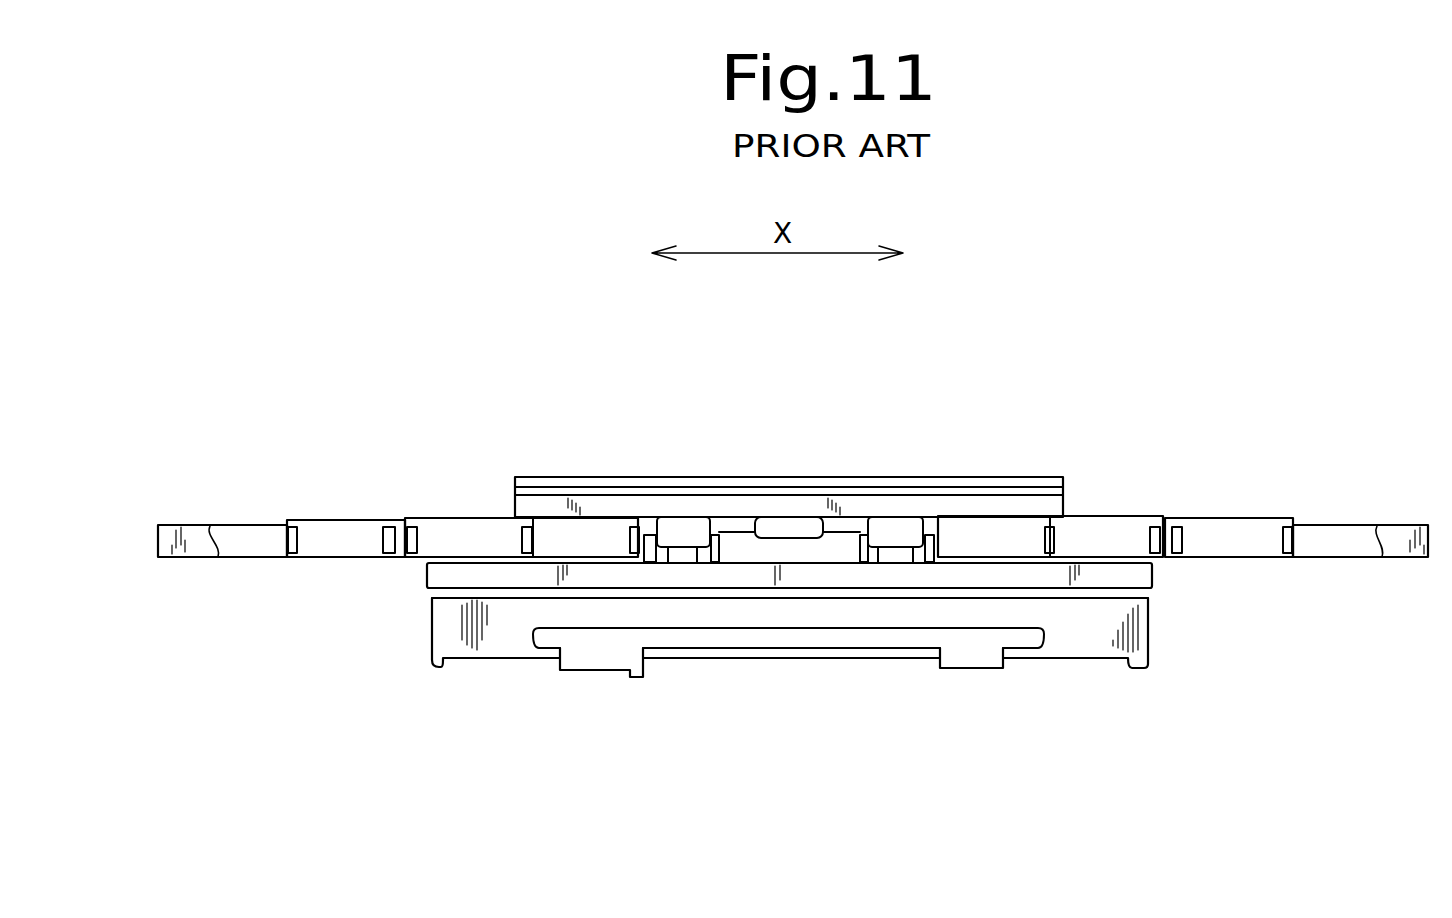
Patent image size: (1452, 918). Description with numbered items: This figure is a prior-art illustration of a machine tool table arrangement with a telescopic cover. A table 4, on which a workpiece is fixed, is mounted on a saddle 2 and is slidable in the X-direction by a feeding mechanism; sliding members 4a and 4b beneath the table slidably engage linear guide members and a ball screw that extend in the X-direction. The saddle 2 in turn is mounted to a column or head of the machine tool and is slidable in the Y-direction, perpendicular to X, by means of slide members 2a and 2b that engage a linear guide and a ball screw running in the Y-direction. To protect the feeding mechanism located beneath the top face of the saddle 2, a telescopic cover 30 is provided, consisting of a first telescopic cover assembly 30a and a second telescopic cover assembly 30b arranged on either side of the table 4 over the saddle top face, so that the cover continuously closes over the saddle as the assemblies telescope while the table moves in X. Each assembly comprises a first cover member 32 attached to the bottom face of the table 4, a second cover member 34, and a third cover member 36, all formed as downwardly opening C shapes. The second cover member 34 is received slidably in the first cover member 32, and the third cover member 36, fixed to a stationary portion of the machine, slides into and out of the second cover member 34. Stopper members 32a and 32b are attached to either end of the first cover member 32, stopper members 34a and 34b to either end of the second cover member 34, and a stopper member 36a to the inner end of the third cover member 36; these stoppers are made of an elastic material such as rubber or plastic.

The saddle 2 is at (428, 622).
The slide member 2a is at (588, 672).
The slide member 2b is at (968, 668).
The table 4 is at (752, 475).
The sliding member 4a is at (678, 523).
The sliding member 4b is at (883, 525).
The telescopic cover 30 is at (406, 378).
The first telescopic cover assembly 30a is at (255, 412).
The second telescopic cover assembly 30b is at (1366, 376).
The first cover member 32 is at (477, 528).
The stopper member 32a is at (418, 535).
The stopper member 32b is at (630, 538).
The second cover member 34 is at (332, 520).
The stopper member 34a is at (298, 547).
The stopper member 34b is at (523, 537).
The third cover member 36 is at (195, 527).
The stopper member 36a is at (378, 542).